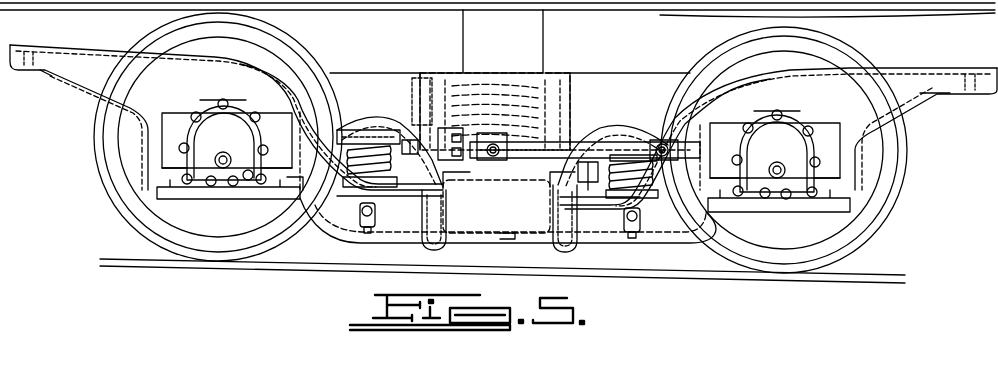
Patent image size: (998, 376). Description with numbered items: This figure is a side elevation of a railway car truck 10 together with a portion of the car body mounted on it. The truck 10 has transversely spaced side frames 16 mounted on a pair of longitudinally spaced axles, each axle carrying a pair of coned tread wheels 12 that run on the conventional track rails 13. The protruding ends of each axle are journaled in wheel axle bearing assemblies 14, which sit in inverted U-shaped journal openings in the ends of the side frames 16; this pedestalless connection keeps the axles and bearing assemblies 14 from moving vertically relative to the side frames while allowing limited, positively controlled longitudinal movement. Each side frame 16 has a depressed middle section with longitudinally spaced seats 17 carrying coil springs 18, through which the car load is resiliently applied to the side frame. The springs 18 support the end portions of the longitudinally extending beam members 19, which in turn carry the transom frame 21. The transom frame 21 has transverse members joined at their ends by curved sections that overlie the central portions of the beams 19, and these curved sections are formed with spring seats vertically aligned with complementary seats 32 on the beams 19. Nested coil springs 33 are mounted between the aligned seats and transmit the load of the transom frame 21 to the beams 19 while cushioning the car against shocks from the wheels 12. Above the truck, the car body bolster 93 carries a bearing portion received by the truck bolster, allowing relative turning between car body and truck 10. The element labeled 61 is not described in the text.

The truck 10 is at (58, 34).
The coned tread wheels 12 is at (115, 142).
The track rails 13 is at (106, 260).
The wheel axle bearing assemblies 14 is at (226, 180).
The side frames 16 is at (133, 30).
The seats 17 is at (365, 194).
The coil springs 18 is at (350, 184).
The beam members 19 is at (637, 93).
The transom frame 21 is at (422, 99).
The seats 32 is at (535, 162).
The nested coil springs 33 is at (462, 72).
The safety support 61 is at (427, 232).
The car body bolster 93 is at (527, 40).